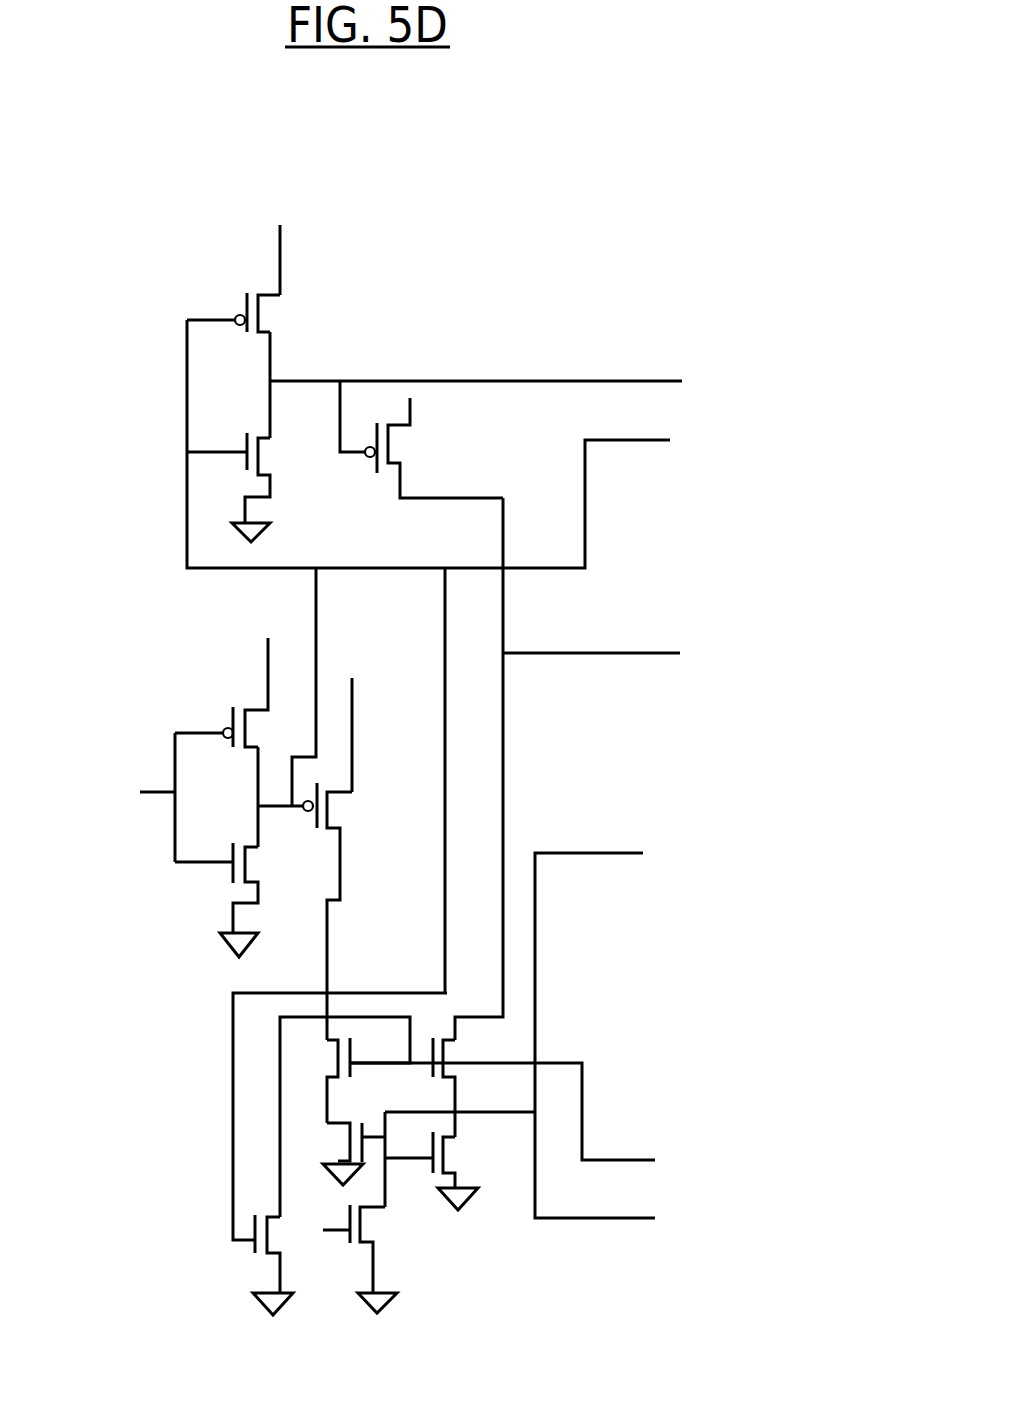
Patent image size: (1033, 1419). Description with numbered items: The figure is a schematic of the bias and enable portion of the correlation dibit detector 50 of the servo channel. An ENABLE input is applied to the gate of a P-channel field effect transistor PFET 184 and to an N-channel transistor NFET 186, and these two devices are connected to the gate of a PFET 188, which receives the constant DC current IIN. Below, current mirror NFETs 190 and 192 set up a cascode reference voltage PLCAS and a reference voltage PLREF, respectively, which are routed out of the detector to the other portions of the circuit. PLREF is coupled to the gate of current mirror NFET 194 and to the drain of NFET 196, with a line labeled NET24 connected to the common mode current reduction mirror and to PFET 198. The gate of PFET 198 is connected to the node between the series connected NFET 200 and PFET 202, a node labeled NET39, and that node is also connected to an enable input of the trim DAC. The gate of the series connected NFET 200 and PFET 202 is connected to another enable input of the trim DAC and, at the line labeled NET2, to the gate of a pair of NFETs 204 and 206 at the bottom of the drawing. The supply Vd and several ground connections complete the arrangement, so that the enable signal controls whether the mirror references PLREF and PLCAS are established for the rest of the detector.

The dibit detector 50 is at (528, 249).
The PFET 202 is at (247, 312).
The NFET 200 is at (250, 487).
The PFET 198 is at (421, 439).
The PFET 184 is at (236, 693).
The NFET 186 is at (231, 900).
The PFET 188 is at (340, 911).
The current mirror NFET 190 is at (360, 1080).
The current mirror NFET 192 is at (340, 1154).
The current mirror NFET 194 is at (460, 1171).
The NFET 196 is at (460, 1087).
The NFET 204 is at (281, 1265).
The NFET 206 is at (364, 1259).